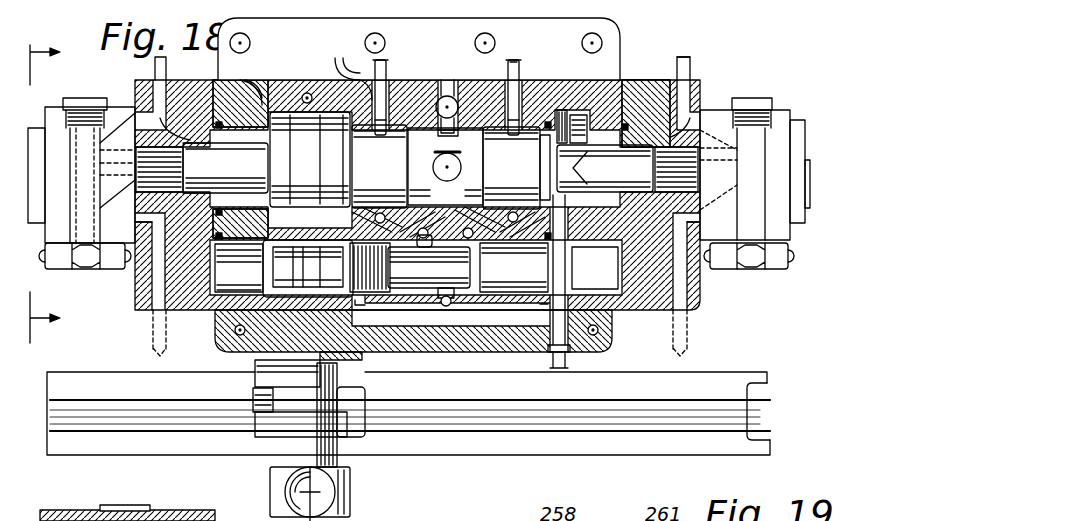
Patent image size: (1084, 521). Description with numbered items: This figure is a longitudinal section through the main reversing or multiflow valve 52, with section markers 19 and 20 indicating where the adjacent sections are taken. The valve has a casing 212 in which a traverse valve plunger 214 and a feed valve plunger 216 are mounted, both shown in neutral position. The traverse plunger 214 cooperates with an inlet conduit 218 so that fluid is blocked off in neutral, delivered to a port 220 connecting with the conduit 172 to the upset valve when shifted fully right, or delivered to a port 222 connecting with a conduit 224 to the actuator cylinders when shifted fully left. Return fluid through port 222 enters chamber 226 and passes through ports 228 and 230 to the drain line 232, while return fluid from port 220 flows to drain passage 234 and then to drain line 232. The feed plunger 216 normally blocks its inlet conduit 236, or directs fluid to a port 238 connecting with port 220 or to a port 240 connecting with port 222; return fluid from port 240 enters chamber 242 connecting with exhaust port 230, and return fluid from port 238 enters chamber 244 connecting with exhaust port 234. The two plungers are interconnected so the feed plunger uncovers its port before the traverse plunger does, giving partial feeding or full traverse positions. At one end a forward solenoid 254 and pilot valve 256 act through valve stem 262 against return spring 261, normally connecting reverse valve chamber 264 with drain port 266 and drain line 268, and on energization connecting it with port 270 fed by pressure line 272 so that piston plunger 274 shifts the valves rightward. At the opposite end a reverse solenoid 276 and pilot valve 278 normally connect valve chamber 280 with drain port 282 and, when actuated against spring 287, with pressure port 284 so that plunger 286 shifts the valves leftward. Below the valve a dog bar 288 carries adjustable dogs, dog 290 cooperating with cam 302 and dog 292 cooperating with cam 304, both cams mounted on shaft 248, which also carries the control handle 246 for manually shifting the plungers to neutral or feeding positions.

The section line 19- 19 is at (45, 184).
The section line 20- 20 is at (296, 40).
The main reversing or multiflow valve 52 is at (618, 25).
The conduit 172 is at (520, 60).
The casing 212 is at (168, 68).
The traverse valve plunger 214 is at (445, 166).
The feed valve plunger 216 is at (429, 270).
The inlet conduit 218 is at (446, 96).
The port 220 is at (519, 85).
The port 222 is at (342, 68).
The conduit 224 is at (386, 72).
The chamber 226 is at (262, 86).
The port 228 is at (347, 224).
The port 230 is at (388, 327).
The drain line 232 is at (559, 368).
The drain passage 234 is at (557, 262).
The inlet conduit 236 is at (460, 332).
The port 238 is at (498, 205).
The port 240 is at (394, 203).
The chamber 242 is at (384, 248).
The chamber 244 is at (520, 272).
The control handle 246 is at (315, 493).
The shaft 248 is at (256, 372).
The forward solenoid 254 is at (38, 115).
The pilot valve 256 is at (116, 100).
The return spring 261 is at (66, 125).
The valve stem 262 is at (60, 262).
The reverse valve chamber 264 is at (159, 169).
The drain port 266 is at (158, 285).
The drain line 268 is at (723, 320).
The port 270 is at (207, 167).
The pressure line 272 is at (684, 58).
The piston plunger 274 is at (225, 168).
The reverse solenoid 276 is at (798, 115).
The pilot valve 278 is at (722, 115).
The valve chamber 280 is at (678, 169).
The drain port 282 is at (684, 287).
The pressure port 284 is at (660, 95).
The plunger 286 is at (605, 151).
The spring 287 is at (763, 98).
The dog bar 288 is at (65, 390).
The dog 290 is at (358, 405).
The dog 292 is at (746, 432).
The cam 302 is at (262, 437).
The cam 304 is at (252, 398).